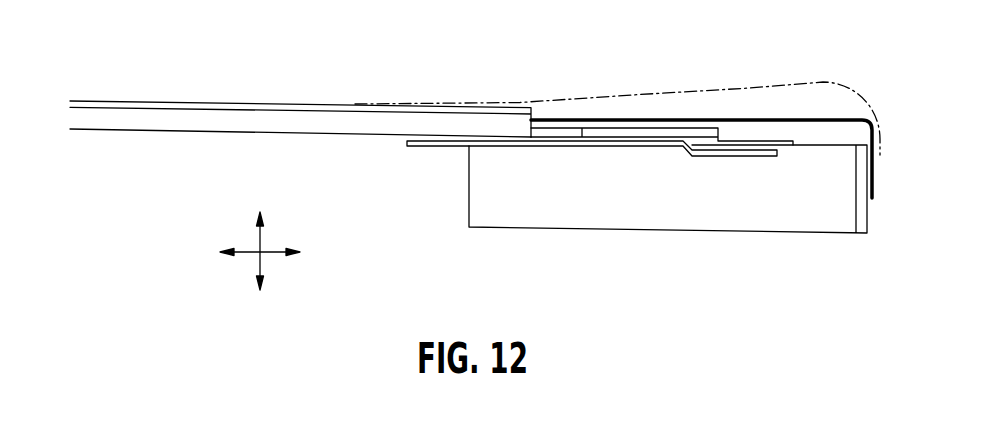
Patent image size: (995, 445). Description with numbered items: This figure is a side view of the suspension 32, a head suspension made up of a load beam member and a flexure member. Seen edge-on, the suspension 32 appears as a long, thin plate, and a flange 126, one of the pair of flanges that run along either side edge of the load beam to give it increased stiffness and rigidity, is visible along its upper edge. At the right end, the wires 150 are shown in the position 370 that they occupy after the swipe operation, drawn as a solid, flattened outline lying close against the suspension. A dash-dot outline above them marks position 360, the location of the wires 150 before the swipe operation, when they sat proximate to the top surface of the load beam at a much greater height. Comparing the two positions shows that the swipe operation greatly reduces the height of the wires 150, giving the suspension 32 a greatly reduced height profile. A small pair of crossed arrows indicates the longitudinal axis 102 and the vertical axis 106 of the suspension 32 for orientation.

The flange 126 is at (233, 105).
The suspension 32 is at (203, 135).
The wires 150 is at (587, 97).
The position before the swipe operation 360 is at (658, 95).
The position after the swipe operation 370 is at (775, 118).
The vertical axis 106 is at (258, 263).
The longitudinal axis 102 is at (268, 253).